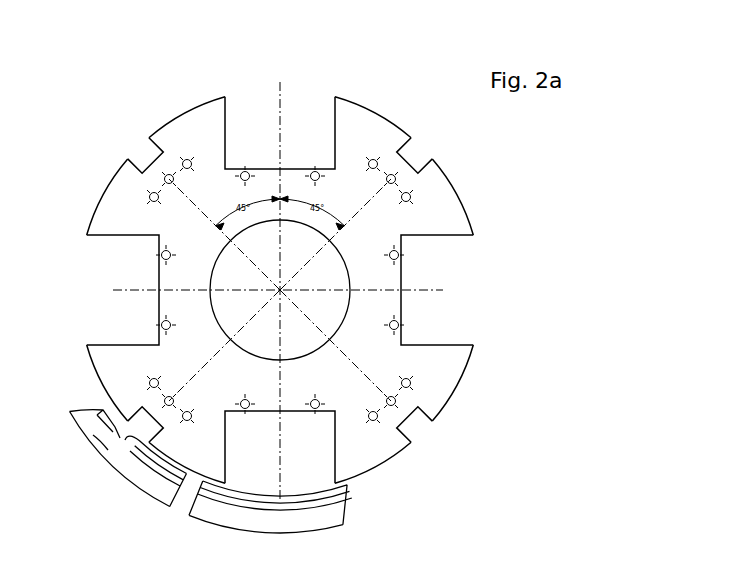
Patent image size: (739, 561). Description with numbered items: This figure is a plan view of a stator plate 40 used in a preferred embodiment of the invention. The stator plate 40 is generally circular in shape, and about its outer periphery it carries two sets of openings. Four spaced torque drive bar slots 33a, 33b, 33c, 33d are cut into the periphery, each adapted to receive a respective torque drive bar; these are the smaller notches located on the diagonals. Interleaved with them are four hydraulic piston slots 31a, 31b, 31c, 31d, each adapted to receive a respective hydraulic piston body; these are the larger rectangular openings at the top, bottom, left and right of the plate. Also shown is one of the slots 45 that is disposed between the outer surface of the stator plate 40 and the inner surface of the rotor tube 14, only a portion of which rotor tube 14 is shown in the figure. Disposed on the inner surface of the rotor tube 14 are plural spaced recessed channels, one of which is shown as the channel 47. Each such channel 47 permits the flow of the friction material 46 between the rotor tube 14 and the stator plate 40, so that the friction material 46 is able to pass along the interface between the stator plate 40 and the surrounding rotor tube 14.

The stator plate 40 is at (177, 107).
The hydraulic piston slot 31a is at (123, 338).
The hydraulic piston slot 31b is at (229, 131).
The hydraulic piston slot 31c is at (443, 237).
The hydraulic piston slot 31d is at (345, 491).
The torque drive bar slot 33a is at (424, 164).
The torque drive bar slot 33b is at (422, 424).
The torque drive bar slot 33c is at (124, 438).
The torque drive bar slot 33d is at (137, 160).
The rotor tube 14 is at (108, 450).
The slot 45 is at (171, 498).
The friction material 46 is at (255, 530).
The recessed channel 47 is at (117, 438).